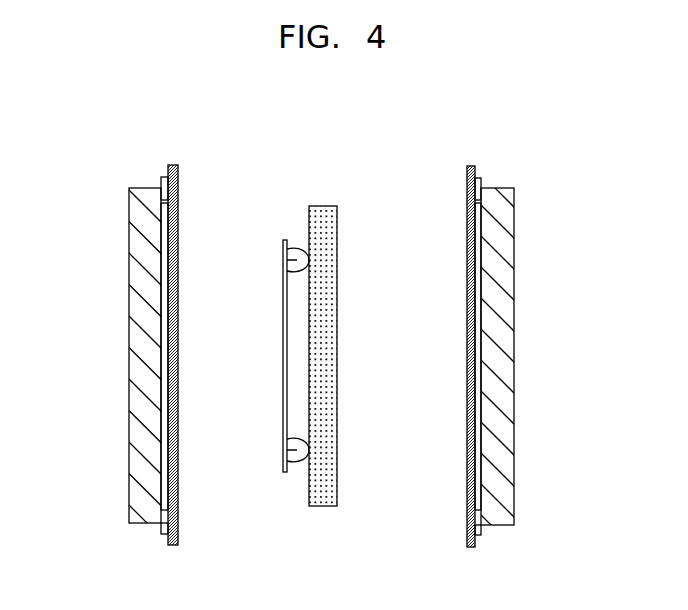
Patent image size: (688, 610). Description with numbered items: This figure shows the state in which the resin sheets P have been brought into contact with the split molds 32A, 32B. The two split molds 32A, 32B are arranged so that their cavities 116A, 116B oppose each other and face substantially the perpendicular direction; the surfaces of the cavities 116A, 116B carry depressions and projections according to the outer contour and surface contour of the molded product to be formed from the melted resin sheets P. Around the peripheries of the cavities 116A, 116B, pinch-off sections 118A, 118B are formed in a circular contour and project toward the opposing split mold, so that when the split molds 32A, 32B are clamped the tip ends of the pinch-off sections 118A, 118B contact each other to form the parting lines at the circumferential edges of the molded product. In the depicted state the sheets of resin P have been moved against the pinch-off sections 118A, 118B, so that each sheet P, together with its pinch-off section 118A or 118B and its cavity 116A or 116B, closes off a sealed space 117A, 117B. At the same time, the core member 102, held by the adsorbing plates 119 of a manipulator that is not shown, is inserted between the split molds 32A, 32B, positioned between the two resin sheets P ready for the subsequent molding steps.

The resin sheet P is at (178, 285).
The split mold 32A is at (110, 330).
The split mold 32B is at (542, 329).
The cavity 116A is at (161, 323).
The cavity 116B is at (482, 320).
The sealed space 117A is at (153, 391).
The sealed space 117B is at (483, 396).
The pinch-off section 118A is at (163, 190).
The pinch-off section 118B is at (476, 195).
The adsorbing plate 119 is at (305, 258).
The core member 102 is at (325, 478).